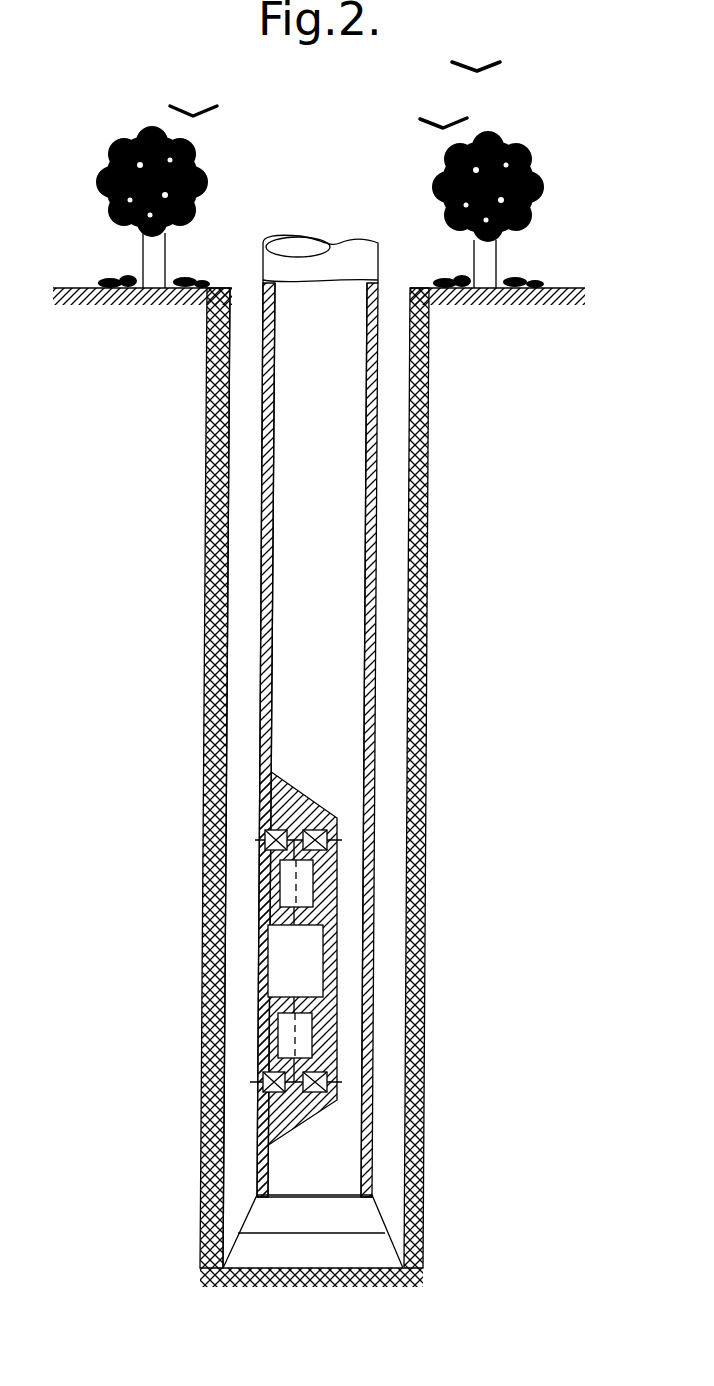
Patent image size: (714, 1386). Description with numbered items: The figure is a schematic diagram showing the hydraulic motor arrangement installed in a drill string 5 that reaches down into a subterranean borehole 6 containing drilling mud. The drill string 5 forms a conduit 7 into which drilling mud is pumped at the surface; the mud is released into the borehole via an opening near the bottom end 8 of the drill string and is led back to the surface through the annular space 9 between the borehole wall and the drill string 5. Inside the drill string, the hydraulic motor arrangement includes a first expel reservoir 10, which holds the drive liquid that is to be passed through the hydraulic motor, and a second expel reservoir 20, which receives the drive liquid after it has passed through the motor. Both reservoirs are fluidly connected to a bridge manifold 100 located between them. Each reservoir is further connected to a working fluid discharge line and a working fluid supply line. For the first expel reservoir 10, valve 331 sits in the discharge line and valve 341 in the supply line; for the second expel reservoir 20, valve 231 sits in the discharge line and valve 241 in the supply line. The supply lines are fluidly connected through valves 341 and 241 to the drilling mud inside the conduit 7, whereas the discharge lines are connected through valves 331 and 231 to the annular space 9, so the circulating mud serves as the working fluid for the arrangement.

The drill string 5 is at (375, 442).
The borehole 6 is at (438, 855).
The conduit 7 is at (333, 364).
The bottom end 8 is at (271, 1257).
The annular space 9 is at (247, 549).
The first expel reservoir 10 is at (285, 885).
The second expel reservoir 20 is at (283, 1033).
The bridge manifold 100 is at (282, 965).
The valve 231 is at (258, 1080).
The valve 241 is at (312, 1092).
The valve 331 is at (265, 840).
The valve 341 is at (313, 830).